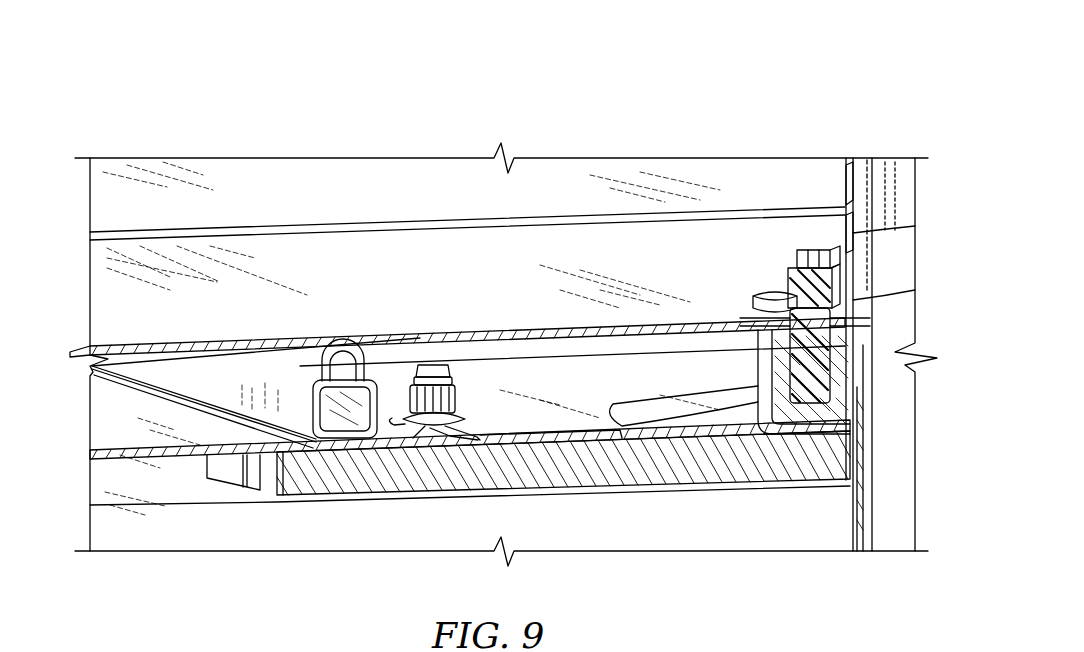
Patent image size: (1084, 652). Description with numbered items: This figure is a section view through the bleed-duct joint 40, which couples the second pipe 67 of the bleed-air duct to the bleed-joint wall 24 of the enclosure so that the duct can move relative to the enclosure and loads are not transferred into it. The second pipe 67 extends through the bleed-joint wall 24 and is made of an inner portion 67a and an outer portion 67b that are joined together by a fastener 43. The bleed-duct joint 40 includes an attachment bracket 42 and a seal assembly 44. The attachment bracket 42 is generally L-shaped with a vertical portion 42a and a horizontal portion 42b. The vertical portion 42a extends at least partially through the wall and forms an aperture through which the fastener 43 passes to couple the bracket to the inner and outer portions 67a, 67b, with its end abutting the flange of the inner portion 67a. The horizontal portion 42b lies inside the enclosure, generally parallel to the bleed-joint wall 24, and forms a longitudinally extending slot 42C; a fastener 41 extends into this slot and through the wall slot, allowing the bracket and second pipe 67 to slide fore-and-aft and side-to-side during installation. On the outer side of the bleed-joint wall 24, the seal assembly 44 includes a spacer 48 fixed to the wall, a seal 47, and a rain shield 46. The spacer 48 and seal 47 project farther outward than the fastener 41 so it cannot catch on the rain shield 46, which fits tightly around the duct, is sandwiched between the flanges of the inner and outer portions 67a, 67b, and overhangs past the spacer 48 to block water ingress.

The bleed-duct joint 40 is at (282, 106).
The fastener 41 is at (413, 384).
The attachment bracket 42 is at (742, 496).
The vertical portion 42a is at (836, 480).
The horizontal portion 42b is at (392, 490).
The longitudinally extending slot 42C is at (233, 489).
The fastener 43 is at (789, 287).
The seal assembly 44 is at (117, 197).
The rain shield 46 is at (110, 318).
The seal 47 is at (302, 362).
The spacer 48 is at (290, 394).
The bleed-joint wall 24 is at (193, 427).
The second pipe 67 is at (925, 269).
The inner portion 67a is at (888, 532).
The outer portion 67b is at (883, 168).